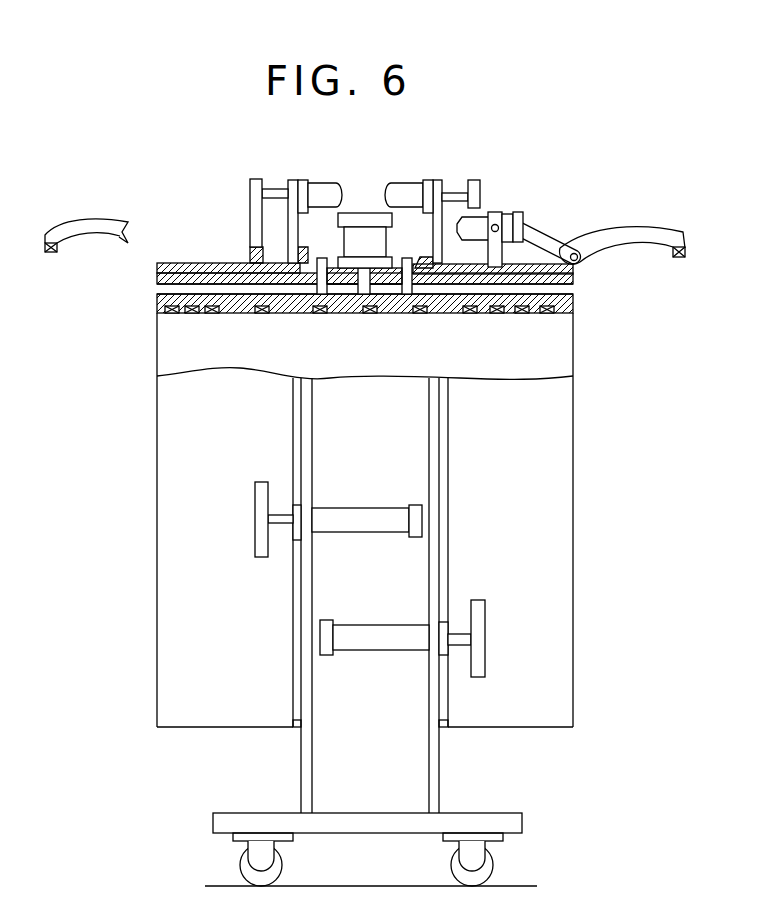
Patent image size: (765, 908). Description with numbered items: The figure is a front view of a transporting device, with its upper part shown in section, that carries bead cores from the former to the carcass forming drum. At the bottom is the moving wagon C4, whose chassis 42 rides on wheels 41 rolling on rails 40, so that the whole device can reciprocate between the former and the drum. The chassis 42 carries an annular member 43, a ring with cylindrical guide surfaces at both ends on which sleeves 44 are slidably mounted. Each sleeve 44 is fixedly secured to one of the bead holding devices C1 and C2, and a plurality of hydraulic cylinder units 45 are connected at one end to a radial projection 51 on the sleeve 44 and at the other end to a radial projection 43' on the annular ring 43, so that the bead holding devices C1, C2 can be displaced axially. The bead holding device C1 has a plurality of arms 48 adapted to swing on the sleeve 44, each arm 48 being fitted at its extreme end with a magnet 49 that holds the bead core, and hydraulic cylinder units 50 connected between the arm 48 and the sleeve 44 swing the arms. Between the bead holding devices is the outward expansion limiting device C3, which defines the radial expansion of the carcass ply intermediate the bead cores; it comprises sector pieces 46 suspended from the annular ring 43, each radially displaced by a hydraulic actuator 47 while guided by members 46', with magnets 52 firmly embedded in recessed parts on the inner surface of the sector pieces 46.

The rails 40 is at (514, 886).
The wheels 41 is at (494, 862).
The chassis 42 is at (522, 813).
The annular member 43 is at (365, 543).
The radial projection 43' is at (361, 201).
The sleeve 44 is at (186, 263).
The hydraulic cylinder unit 45 is at (326, 183).
The sector piece 46 is at (365, 287).
The guide member 46' is at (415, 259).
The hydraulic actuator 47 is at (366, 213).
The arm 48 is at (670, 232).
The magnet 49 is at (688, 251).
The hydraulic cylinder unit 50 is at (520, 213).
The radial projection 51 is at (255, 179).
The magnet 52 is at (560, 312).
The bead holding device C1 is at (631, 222).
The bead holding device C2 is at (93, 222).
The outward expansion limiting device C3 is at (580, 305).
The moving wagon C4 is at (461, 808).